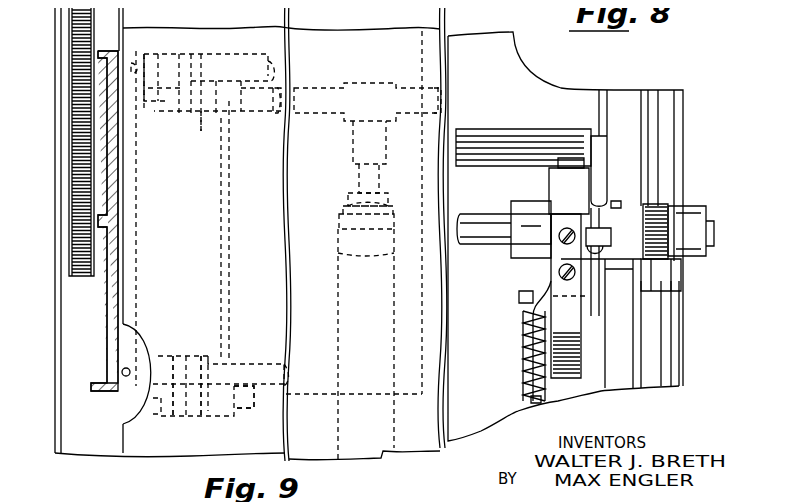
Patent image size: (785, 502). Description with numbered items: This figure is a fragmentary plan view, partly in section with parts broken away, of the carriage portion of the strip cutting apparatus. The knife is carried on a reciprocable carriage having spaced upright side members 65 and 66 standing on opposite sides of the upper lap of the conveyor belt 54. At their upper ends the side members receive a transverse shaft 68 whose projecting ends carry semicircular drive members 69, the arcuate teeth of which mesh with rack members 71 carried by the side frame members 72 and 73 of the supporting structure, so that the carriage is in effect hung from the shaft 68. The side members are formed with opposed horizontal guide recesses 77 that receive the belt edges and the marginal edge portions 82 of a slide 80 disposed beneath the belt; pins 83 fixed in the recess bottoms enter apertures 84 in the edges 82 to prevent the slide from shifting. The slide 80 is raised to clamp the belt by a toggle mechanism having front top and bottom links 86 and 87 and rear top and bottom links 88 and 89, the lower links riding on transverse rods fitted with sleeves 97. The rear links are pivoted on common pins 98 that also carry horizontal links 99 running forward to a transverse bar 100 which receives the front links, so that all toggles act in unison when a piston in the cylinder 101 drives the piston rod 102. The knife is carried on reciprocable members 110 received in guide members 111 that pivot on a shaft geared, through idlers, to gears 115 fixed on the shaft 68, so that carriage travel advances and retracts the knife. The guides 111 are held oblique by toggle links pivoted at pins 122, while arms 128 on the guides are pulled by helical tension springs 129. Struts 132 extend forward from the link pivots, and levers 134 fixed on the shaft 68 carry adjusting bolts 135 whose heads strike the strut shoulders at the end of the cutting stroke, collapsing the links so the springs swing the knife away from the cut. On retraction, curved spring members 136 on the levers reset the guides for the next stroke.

The conveyor belt 54 is at (367, 40).
The side member 65 is at (105, 297).
The side member 66 is at (617, 350).
The transverse shaft 68 is at (483, 244).
The drive member 69 is at (680, 130).
The rack member 71 is at (70, 152).
The side frame member 72 is at (53, 396).
The side frame member 73 is at (672, 355).
The guide recess 77 is at (118, 263).
The slide 80 is at (403, 11).
The marginal edge portion 82 is at (128, 342).
The pin 83 is at (132, 67).
The aperture 84 is at (133, 364).
The top link 86 is at (182, 113).
The bottom link 87 is at (200, 128).
The top link 88 is at (179, 416).
The bottom link 89 is at (201, 417).
The sleeve 97 is at (233, 59).
The pivot pin 98 is at (250, 408).
The horizontal link 99 is at (231, 261).
The transverse bar 100 is at (312, 86).
The cylinder 101 is at (336, 290).
The piston rod 102 is at (357, 177).
The reciprocable member 110 is at (565, 157).
The guide member 111 is at (548, 176).
The gear 115 is at (660, 206).
The pin 122 is at (518, 297).
The arm 128 is at (530, 362).
The helical tension spring 129 is at (523, 333).
The strut 132 is at (604, 147).
The lever 134 is at (615, 262).
The adjusting bolt 135 is at (612, 205).
The spring member 136 is at (562, 382).